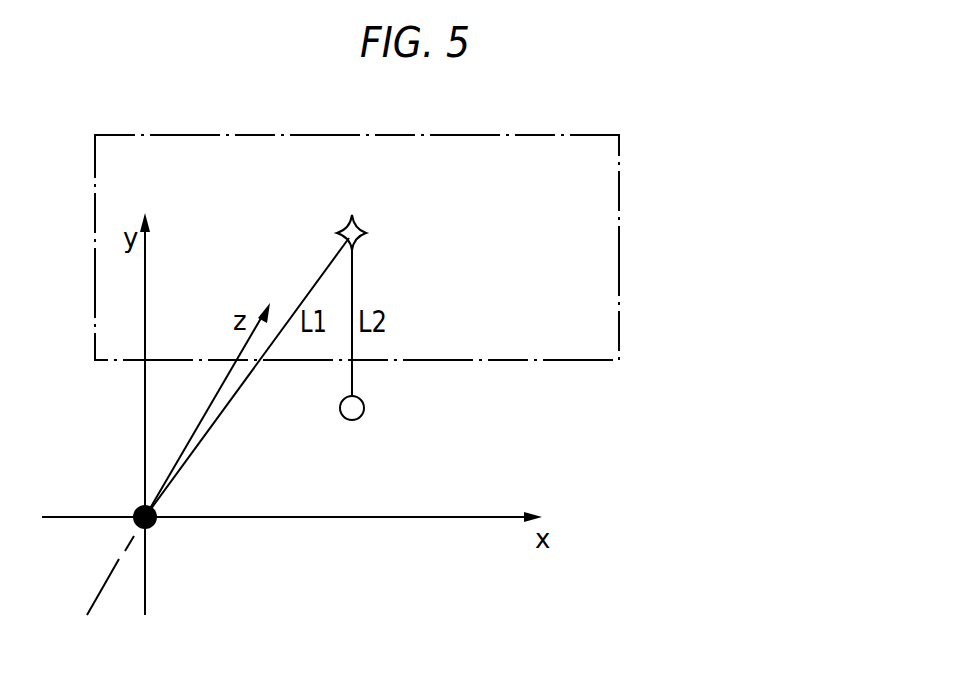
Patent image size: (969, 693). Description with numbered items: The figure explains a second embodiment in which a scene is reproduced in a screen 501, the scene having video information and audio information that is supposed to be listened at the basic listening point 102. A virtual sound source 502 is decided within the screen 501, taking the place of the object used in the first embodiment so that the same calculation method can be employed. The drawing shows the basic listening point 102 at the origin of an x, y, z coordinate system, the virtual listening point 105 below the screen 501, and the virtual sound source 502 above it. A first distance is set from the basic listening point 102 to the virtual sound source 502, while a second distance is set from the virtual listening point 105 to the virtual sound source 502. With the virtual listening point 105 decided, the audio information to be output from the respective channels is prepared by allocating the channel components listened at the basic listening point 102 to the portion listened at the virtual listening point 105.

The screen 501 is at (620, 197).
The virtual sound source 502 is at (362, 233).
The virtual listening point 105 is at (360, 412).
The basic listening point 102 is at (152, 527).